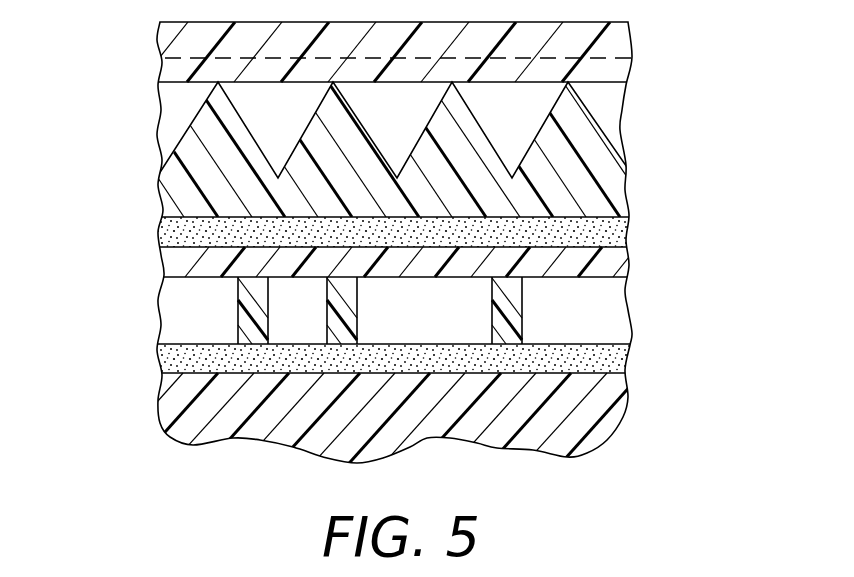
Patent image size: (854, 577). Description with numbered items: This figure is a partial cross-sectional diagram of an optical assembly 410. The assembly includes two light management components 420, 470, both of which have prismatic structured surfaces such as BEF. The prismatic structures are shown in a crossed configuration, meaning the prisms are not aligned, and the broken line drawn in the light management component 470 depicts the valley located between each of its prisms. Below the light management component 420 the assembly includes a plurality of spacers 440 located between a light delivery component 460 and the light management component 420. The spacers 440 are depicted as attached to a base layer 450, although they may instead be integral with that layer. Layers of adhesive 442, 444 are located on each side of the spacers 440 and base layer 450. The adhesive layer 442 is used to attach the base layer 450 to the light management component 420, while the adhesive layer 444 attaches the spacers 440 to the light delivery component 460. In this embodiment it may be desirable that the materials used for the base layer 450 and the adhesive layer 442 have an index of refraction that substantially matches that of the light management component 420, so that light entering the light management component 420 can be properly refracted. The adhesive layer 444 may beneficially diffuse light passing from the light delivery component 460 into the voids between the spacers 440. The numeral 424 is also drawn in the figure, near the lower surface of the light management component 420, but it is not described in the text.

The optical assembly 410 is at (113, 82).
The light management component 470 is at (622, 72).
The light management component 420 is at (607, 170).
The lower surface of patterned layer 424 is at (183, 233).
The adhesive layer 442 is at (612, 230).
The base layer 450 is at (178, 265).
The spacers 440 is at (338, 298).
The adhesive layer 444 is at (613, 357).
The light delivery component 460 is at (593, 410).